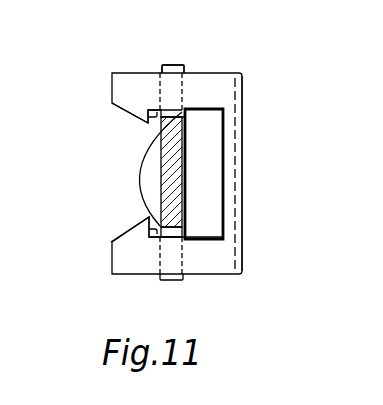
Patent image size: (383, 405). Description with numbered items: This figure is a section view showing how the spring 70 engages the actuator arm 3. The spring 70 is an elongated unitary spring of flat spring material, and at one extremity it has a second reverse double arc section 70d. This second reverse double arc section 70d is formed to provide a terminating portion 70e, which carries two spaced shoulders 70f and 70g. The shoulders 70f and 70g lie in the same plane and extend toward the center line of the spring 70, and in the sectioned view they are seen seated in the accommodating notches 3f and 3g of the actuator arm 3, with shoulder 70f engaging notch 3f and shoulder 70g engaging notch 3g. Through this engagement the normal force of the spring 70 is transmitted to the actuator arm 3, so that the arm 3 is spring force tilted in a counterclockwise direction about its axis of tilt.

The spring 70 is at (242, 240).
The terminating portion 70e is at (207, 73).
The second reverse double arc section 70d is at (242, 137).
The shoulder 70f is at (148, 123).
The shoulder 70g is at (149, 218).
The notch 3f is at (186, 110).
The notch 3g is at (178, 233).
The actuator arm 3 is at (163, 150).